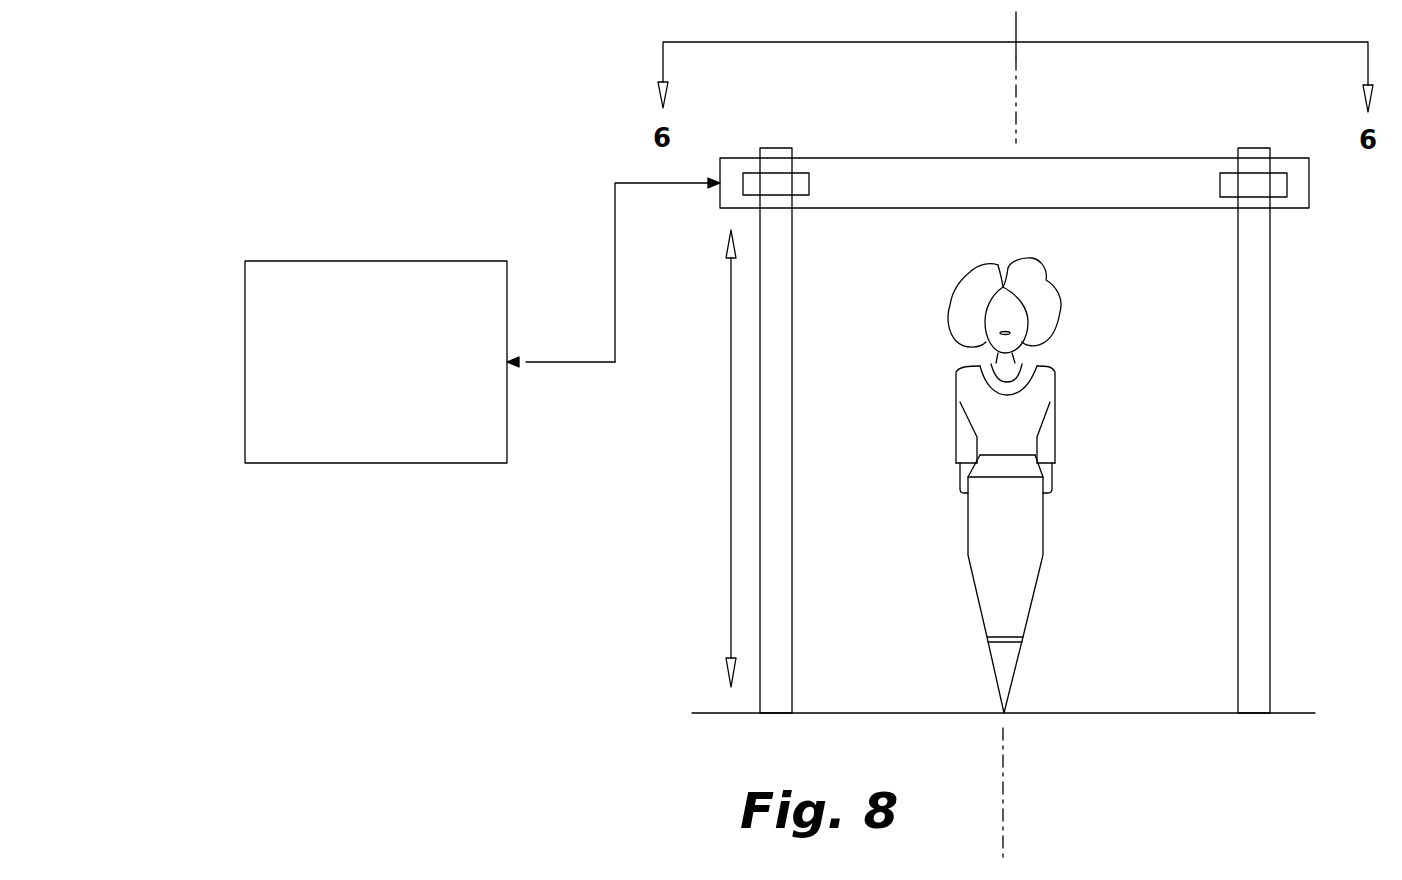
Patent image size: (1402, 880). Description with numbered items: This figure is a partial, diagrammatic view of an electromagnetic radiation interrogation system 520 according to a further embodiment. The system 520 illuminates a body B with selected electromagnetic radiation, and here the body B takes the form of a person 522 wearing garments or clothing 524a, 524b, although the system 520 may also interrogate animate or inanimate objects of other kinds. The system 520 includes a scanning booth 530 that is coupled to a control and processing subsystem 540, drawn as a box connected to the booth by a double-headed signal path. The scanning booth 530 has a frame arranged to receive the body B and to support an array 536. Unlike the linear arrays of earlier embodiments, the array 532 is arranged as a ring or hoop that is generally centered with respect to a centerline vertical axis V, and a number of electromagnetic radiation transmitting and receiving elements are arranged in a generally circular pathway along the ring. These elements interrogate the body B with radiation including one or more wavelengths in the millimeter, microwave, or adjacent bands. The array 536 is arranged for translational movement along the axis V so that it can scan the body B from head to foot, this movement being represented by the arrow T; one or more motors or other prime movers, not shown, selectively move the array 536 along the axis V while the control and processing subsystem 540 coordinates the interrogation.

The electromagnetic radiation interrogation system 520 is at (283, 132).
The person 522 is at (1057, 382).
The garment 524a is at (1055, 448).
The garment 524b is at (1043, 576).
The scanning booth 530 is at (1122, 686).
The array 532 is at (793, 540).
The array 536 is at (1075, 158).
The control and processing subsystem 540 is at (298, 463).
The body B is at (953, 375).
The arrow T is at (728, 450).
The centerline vertical axis V is at (1016, 33).